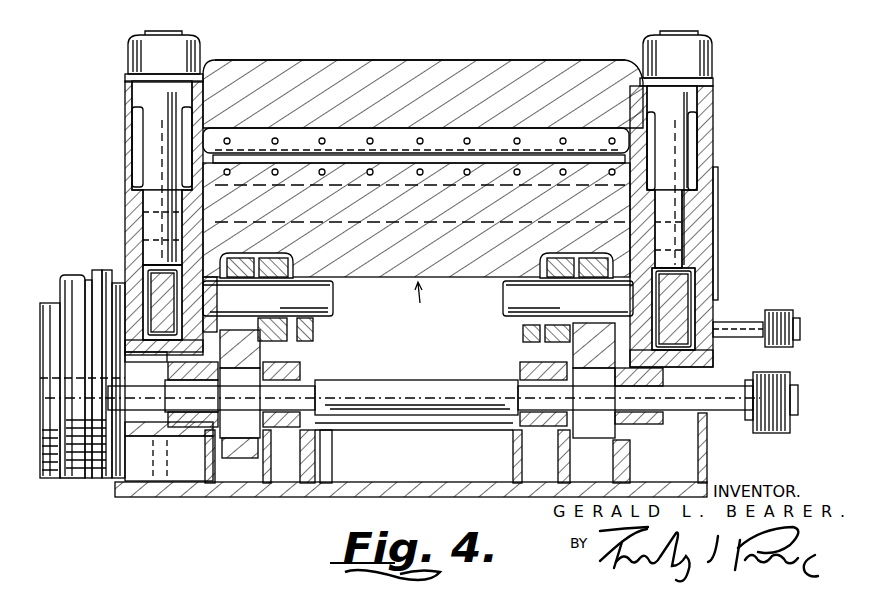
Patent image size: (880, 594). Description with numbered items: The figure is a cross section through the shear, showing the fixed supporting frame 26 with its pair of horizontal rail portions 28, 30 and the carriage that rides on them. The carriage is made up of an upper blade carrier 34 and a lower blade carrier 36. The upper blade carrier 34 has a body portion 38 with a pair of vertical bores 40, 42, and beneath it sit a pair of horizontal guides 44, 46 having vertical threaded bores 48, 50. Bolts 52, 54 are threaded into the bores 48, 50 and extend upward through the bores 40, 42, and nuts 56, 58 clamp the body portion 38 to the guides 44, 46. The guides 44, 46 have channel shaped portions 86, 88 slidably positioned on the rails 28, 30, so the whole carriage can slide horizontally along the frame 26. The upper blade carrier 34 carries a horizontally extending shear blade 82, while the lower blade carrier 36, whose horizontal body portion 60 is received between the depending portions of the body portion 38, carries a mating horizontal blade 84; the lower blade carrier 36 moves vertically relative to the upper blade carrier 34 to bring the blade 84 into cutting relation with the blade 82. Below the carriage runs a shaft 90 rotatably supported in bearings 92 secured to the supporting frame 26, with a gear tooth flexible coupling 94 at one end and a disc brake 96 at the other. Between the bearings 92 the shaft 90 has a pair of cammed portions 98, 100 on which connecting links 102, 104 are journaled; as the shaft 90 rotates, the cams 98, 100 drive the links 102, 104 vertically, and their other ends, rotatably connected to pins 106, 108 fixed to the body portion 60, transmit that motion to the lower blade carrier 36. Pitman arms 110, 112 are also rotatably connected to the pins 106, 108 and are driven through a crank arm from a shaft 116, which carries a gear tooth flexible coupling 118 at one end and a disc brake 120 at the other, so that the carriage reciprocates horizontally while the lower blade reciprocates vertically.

The supporting frame 26 is at (192, 497).
The horizontal rail portion 28 is at (680, 290).
The horizontal rail portion 30 is at (150, 270).
The upper blade carrier 34 is at (481, 50).
The lower blade carrier 36 is at (410, 304).
The body portion 38 is at (450, 107).
The vertical bore 40 is at (700, 100).
The vertical bore 42 is at (132, 98).
The horizontal guide 44 is at (703, 250).
The horizontal guide 46 is at (132, 240).
The vertical threaded bore 48 is at (683, 225).
The vertical threaded bore 50 is at (146, 223).
The bolt 52 is at (684, 133).
The bolt 54 is at (148, 125).
The nut 56 is at (706, 55).
The nut 58 is at (133, 50).
The horizontal body portion 60 is at (420, 250).
The shear blade 82 is at (480, 153).
The horizontal blade 84 is at (410, 160).
The channel shaped portion 86 is at (710, 325).
The channel shaped portion 88 is at (157, 347).
The shaft 90 is at (438, 388).
The bearings 92 is at (172, 366).
The gear tooth flexible coupling 94 is at (775, 433).
The disc brake 96 is at (56, 480).
The cammed portion 98 is at (594, 403).
The cammed portion 100 is at (240, 403).
The connecting link 102 is at (575, 348).
The connecting link 104 is at (262, 350).
The pin 106 is at (505, 300).
The pin 108 is at (333, 318).
The pitman arm 110 is at (540, 267).
The pitman arm 112 is at (293, 277).
The shaft 116 is at (740, 337).
The gear tooth flexible coupling 118 is at (797, 332).
The disc brake 120 is at (70, 274).